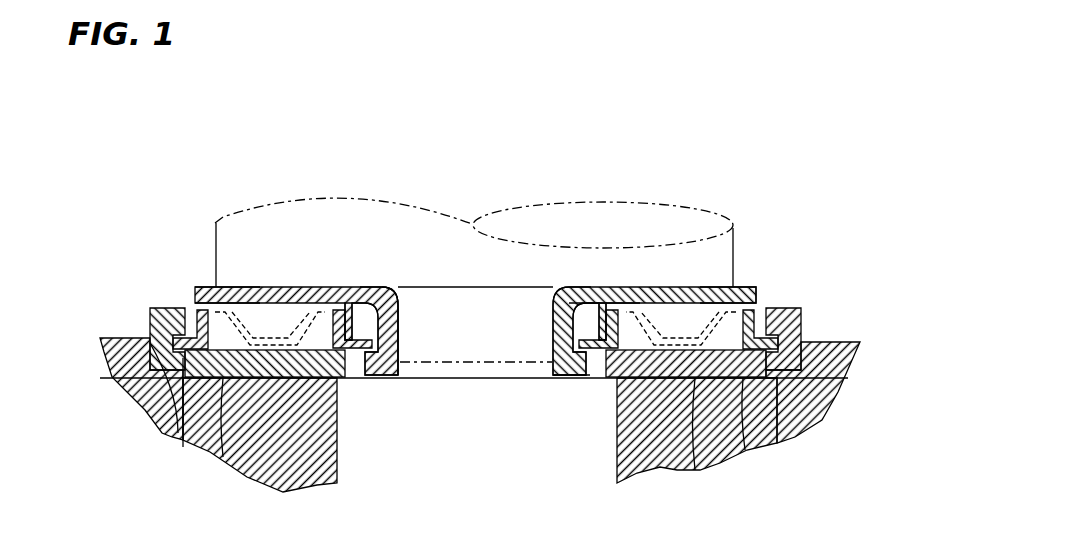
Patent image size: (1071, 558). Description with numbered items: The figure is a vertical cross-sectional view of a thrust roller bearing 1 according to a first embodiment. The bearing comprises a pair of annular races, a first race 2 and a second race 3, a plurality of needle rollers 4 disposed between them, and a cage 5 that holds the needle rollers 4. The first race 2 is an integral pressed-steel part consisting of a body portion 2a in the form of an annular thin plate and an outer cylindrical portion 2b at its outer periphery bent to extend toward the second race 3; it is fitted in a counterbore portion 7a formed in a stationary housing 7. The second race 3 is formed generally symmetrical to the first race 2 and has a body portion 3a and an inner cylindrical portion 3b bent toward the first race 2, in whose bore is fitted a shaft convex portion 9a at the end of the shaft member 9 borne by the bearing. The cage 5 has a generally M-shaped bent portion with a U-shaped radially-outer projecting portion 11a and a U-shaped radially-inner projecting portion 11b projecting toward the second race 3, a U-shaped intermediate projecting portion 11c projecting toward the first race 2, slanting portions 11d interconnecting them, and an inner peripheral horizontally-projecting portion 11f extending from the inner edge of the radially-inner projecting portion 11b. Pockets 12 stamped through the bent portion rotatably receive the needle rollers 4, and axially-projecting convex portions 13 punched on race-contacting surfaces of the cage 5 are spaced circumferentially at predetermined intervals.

The thrust roller bearing 1 is at (470, 140).
The first race 2 is at (353, 380).
The body portion 2a is at (218, 452).
The outer cylindrical portion 2b is at (160, 310).
The second race 3 is at (303, 290).
The body portion 3a is at (243, 300).
The inner cylindrical portion 3b is at (403, 308).
The needle rollers 4 is at (268, 318).
The cage 5 is at (357, 297).
The housing 7 is at (640, 470).
The counterbore portion 7a is at (147, 420).
The shaft member 9 is at (470, 222).
The shaft convex portion 9a is at (470, 337).
The radially-outer projecting portion 11a is at (652, 295).
The radially-inner projecting portion 11b is at (620, 300).
The intermediate projecting portion 11c is at (683, 457).
The slanting portion 11d is at (697, 333).
The inner peripheral horizontally-projecting portion 11f is at (560, 380).
The pockets 12 is at (336, 312).
The axially-projecting convex portions 13 is at (716, 300).